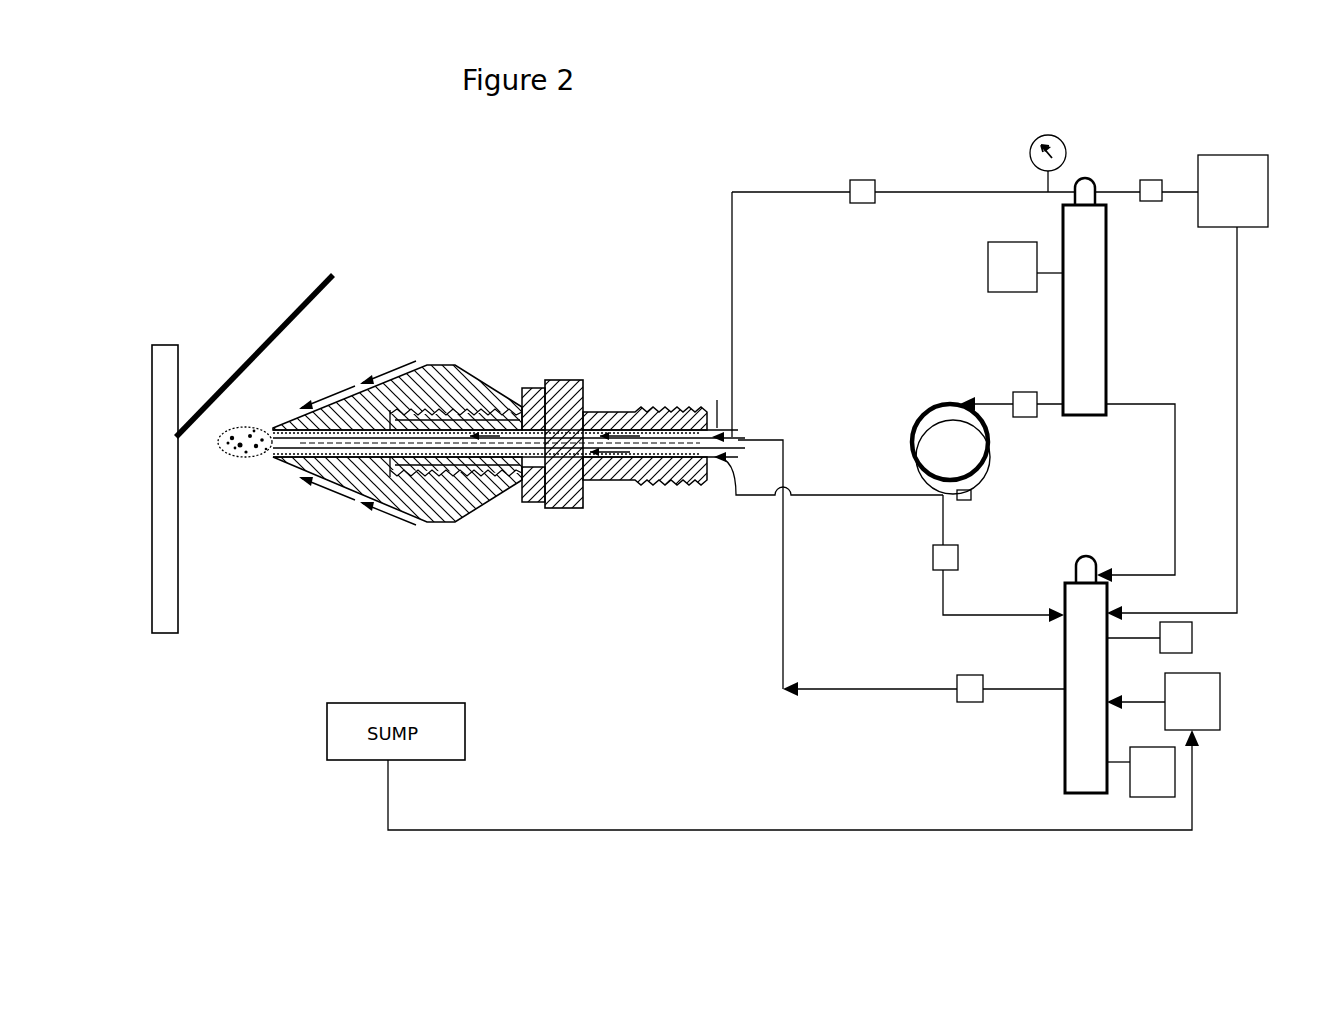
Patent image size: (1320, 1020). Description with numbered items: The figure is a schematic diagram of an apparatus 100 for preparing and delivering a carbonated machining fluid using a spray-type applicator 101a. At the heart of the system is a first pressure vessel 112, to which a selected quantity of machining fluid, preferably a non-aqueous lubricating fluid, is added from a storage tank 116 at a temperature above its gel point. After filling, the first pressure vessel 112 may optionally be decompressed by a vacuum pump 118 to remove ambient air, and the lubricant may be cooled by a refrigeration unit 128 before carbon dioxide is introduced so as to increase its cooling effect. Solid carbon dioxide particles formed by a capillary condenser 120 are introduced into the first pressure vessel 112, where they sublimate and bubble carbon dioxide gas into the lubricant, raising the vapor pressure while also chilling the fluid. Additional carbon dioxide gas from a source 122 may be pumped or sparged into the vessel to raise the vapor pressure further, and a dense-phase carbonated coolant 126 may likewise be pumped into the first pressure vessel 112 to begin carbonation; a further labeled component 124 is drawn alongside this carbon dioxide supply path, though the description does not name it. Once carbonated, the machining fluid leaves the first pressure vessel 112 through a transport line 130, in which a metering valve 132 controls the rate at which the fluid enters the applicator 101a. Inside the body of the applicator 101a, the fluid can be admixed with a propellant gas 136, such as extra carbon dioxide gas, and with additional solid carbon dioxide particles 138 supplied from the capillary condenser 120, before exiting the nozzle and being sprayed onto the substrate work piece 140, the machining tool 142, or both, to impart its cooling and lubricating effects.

The apparatus 100 is at (846, 72).
The spray-type applicator 101a is at (584, 380).
The first pressure vessel 112 is at (1065, 705).
The storage tank 116 is at (1163, 701).
The vacuum pump 118 is at (1192, 640).
The capillary condenser 120 is at (952, 398).
The carbon dioxide source 122 is at (1187, 387).
The pressure regulator 124 is at (1025, 267).
The carbonated coolant 126 is at (1175, 420).
The refrigeration unit 128 is at (1141, 772).
The transport line 130 is at (820, 687).
The metering valve 132 is at (965, 704).
The propellant gas 136 is at (732, 312).
The solid carbon dioxide particles 138 is at (810, 495).
The substrate work piece 140 is at (170, 640).
The machining tool 142 is at (293, 300).